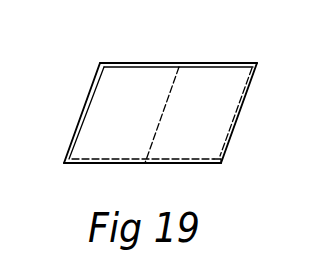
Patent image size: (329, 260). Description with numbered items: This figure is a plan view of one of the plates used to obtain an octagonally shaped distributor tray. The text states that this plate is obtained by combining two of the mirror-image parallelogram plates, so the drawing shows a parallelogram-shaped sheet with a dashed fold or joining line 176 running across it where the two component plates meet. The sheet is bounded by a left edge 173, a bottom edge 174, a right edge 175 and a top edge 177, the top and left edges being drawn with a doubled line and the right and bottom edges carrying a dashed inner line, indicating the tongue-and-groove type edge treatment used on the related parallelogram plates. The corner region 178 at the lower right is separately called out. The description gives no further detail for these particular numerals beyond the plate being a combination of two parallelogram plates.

The left side edge of sheet 173 is at (86, 105).
The bottom edge of sheet 174 is at (93, 163).
The right side edge of sheet 175 is at (239, 118).
The fold line 176 is at (162, 63).
The top left corner / top edge 177 is at (112, 63).
The bottom right corner 178 is at (205, 163).